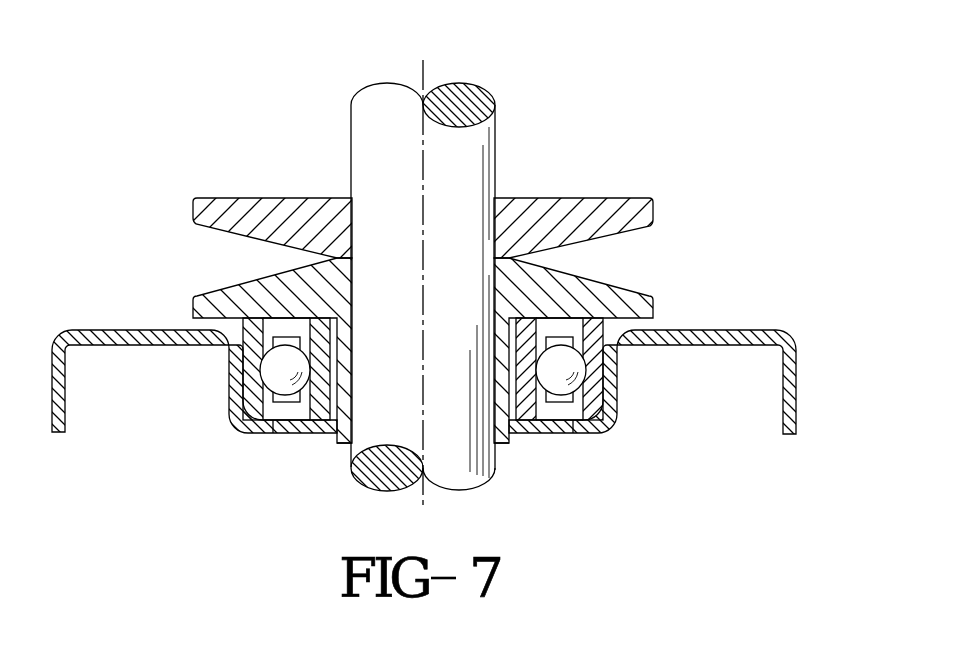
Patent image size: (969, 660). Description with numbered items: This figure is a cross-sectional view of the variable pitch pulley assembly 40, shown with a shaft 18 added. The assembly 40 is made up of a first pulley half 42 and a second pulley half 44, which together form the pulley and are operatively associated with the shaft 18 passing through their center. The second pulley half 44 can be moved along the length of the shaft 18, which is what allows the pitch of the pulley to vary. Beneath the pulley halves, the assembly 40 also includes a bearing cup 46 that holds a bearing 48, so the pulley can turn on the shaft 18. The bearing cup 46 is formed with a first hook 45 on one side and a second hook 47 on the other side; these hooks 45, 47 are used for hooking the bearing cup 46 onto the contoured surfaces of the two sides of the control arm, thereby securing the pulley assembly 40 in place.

The shaft 18 is at (388, 168).
The variable pitch pulley assembly 40 is at (803, 195).
The first pulley half 42 is at (635, 200).
The second pulley half 44 is at (625, 305).
The first hook 45 is at (745, 331).
The bearing cup 46 is at (527, 432).
The second hook 47 is at (108, 330).
The bearing 48 is at (552, 375).